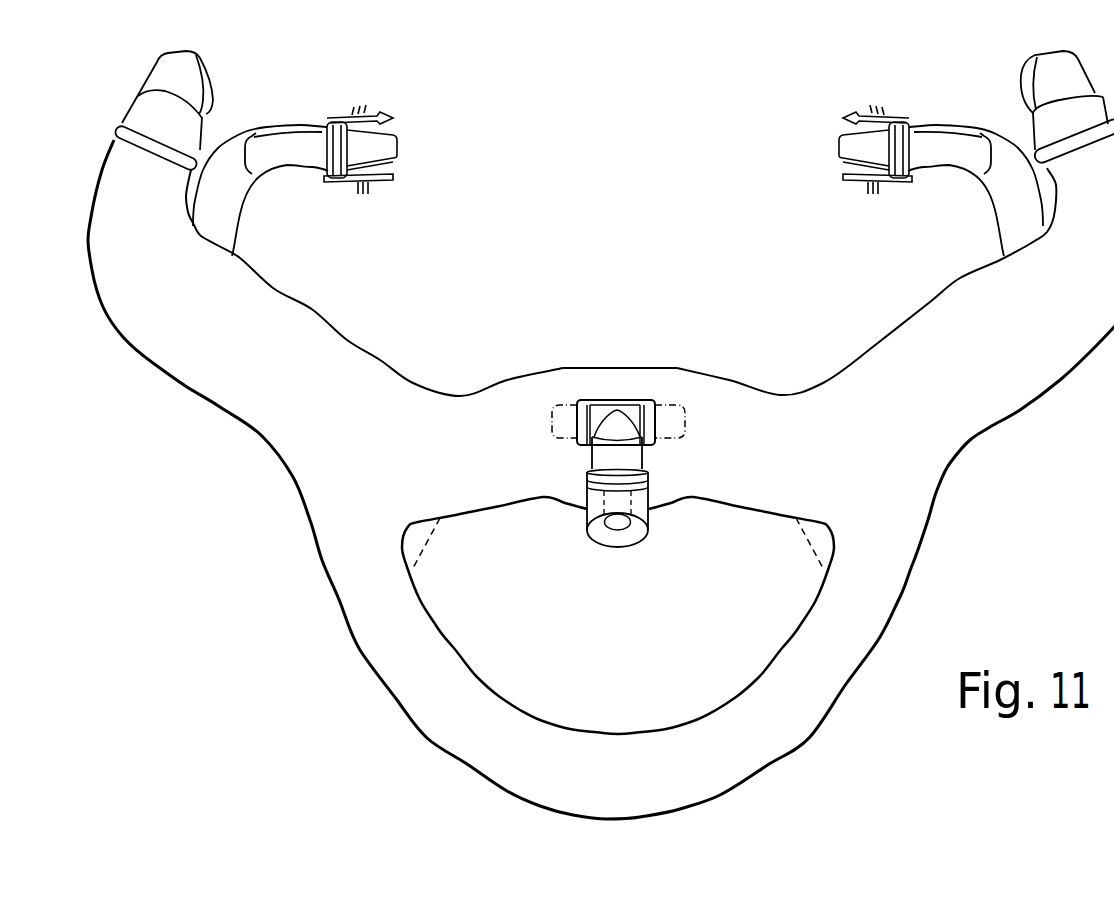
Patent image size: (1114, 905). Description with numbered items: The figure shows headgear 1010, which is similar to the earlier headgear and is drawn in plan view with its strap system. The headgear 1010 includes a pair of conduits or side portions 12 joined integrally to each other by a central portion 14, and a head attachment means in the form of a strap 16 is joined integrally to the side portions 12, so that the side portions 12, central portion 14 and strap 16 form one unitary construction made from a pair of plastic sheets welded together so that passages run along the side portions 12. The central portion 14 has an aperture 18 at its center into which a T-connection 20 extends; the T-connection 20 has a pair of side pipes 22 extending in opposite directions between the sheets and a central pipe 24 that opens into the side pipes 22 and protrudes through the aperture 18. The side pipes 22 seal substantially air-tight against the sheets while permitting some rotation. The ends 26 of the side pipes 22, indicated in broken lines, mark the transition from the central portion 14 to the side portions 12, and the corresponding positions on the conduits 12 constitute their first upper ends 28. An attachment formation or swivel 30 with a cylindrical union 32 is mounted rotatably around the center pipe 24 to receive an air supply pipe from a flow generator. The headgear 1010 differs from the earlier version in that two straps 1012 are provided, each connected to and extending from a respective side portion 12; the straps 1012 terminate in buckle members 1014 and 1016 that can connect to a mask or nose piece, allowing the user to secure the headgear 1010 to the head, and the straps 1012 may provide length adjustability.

The headgear 1010 is at (572, 229).
The strap 1012 is at (311, 134).
The buckle member 1014 is at (397, 138).
The buckle member 1016 is at (840, 138).
The conduit or side portion 12 is at (273, 327).
The central portion 14 is at (752, 423).
The strap 16 is at (437, 723).
The aperture 18 is at (598, 401).
The T-connection or T-shaped connector 20 is at (605, 553).
The side pipe 22 is at (586, 410).
The central pipe 24 is at (630, 453).
The end of side pipe 26 is at (548, 410).
The first upper end of conduit 28 is at (546, 404).
The attachment formation or swivel 30 is at (661, 537).
The cylindrical union 32 is at (627, 557).